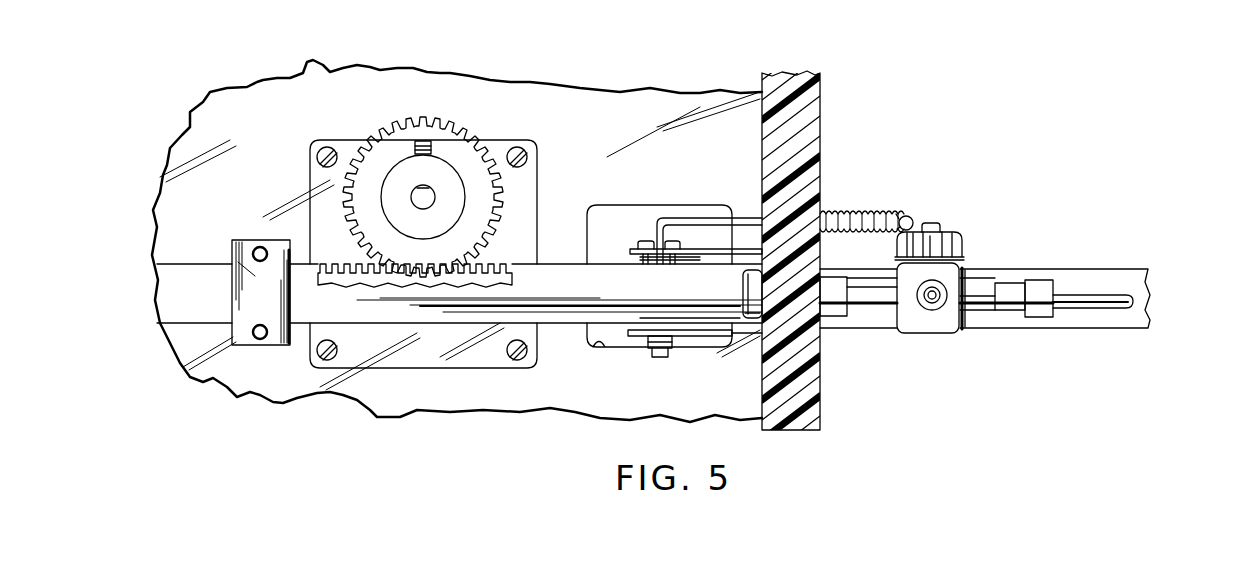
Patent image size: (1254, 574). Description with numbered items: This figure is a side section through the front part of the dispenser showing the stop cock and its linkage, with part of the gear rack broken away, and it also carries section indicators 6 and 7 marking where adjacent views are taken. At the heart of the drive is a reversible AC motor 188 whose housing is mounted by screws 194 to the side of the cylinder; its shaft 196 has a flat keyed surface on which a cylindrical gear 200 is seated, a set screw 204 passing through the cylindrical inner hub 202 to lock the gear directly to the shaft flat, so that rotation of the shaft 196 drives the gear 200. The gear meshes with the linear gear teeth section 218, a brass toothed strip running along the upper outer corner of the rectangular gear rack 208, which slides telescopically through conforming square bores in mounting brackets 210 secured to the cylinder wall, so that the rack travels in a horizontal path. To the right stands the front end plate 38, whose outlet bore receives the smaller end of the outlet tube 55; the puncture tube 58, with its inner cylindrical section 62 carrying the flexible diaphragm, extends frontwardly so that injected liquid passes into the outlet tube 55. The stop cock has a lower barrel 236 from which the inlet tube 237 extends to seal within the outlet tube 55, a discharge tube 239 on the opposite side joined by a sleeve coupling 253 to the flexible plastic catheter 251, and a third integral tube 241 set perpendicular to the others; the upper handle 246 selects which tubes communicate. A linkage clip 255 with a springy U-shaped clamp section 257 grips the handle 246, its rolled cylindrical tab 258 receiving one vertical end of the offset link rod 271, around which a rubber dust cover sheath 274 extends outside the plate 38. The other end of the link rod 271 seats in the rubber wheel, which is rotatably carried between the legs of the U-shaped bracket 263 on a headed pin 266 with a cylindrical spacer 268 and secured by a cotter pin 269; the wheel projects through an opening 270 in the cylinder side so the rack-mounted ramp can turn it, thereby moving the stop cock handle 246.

The front end plate 38 is at (820, 80).
The outlet tube 55 is at (835, 300).
The puncture tube 58 is at (740, 306).
The inner cylindrical section 62 is at (745, 284).
The reversible drive AC motor 188 is at (417, 385).
The screws 194 is at (320, 152).
The shaft 196 is at (412, 197).
The cylindrical gear 200 is at (452, 150).
The cylindrical inner hub 202 is at (405, 170).
The set screw 204 is at (417, 145).
The gear rack 208 is at (1123, 328).
The mounting brackets 210 is at (232, 262).
The linear gear teeth section 218 is at (505, 268).
The lower barrel 236 is at (947, 322).
The inlet tube 237 is at (868, 292).
The discharge tube 239 is at (983, 293).
The third integral tube 241 is at (933, 305).
The upper handle 246 is at (950, 250).
The flexible plastic catheter 251 is at (1103, 298).
The sleeve coupling 253 is at (1022, 290).
The linkage clip 255 is at (937, 225).
The clamp section 257 is at (945, 232).
The rolled cylindrical tab 258 is at (903, 220).
The U-shaped bracket 263 is at (690, 340).
The headed pin 266 is at (645, 248).
The cylindrical spacer 268 is at (650, 265).
The cotter pin 269 is at (665, 355).
The opening 270 is at (597, 342).
The link rod 271 is at (700, 223).
The rubber dust cover sheath 274 is at (845, 212).
The section line 6 is at (550, 43).
The section line 7 is at (1217, 217).